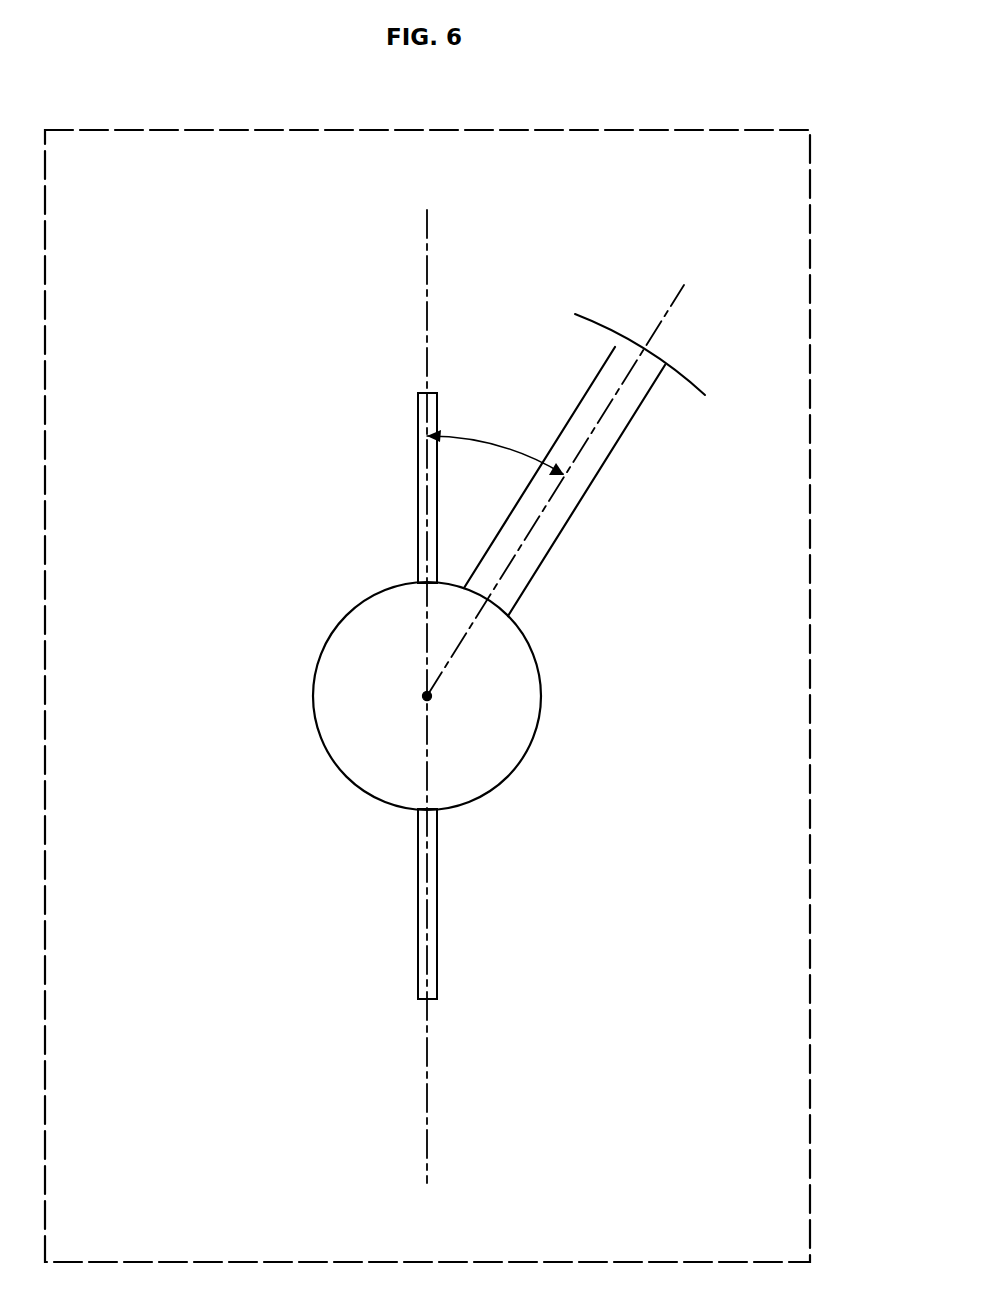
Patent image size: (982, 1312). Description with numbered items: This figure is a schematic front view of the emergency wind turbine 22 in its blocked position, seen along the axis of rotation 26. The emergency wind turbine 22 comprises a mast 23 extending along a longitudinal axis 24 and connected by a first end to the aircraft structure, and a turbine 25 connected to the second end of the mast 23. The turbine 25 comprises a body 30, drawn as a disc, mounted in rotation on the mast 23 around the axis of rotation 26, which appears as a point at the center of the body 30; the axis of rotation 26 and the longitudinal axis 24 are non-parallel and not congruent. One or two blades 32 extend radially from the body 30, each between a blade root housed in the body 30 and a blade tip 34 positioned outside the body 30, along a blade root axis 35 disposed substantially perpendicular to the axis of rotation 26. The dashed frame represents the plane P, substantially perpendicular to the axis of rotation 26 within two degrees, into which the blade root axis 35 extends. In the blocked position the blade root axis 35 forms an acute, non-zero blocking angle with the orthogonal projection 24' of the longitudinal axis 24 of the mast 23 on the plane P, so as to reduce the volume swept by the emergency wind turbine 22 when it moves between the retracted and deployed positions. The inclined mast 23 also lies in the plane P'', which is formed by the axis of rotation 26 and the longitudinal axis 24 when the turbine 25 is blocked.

The emergency wind turbine 22 is at (291, 468).
The mast 23 is at (567, 493).
The longitudinal axis 24 is at (564, 490).
The orthogonal projection of the longitudinal axis 24' is at (569, 565).
The turbine 25 is at (541, 695).
The axis of rotation 26 is at (431, 697).
The body 30 is at (392, 712).
The blades 32 is at (412, 504).
The blade tip 34 is at (429, 392).
The blade root axis 35 is at (427, 299).
The plane P is at (463, 696).
The plane P" P'' is at (635, 450).